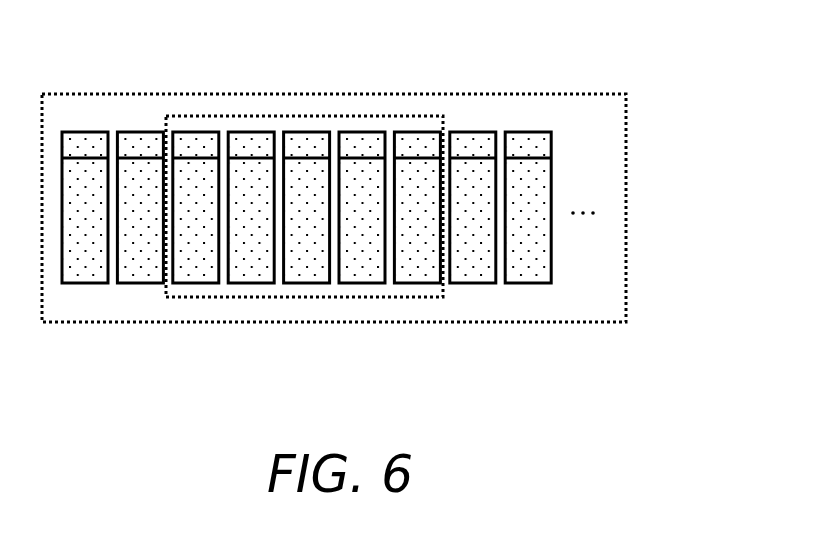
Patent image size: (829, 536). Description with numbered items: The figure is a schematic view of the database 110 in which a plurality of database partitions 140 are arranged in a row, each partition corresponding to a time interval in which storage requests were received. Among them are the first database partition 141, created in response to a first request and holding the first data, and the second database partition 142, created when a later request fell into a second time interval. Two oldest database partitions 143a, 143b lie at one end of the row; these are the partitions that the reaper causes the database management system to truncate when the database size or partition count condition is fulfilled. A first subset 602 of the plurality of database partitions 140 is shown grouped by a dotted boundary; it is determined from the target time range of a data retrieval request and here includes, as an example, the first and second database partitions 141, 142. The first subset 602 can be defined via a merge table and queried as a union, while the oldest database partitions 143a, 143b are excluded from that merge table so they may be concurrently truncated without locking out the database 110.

The database 110 is at (626, 217).
The plurality of database partitions 140 is at (329, 208).
The first database partition 141 is at (250, 133).
The second database partition 142 is at (303, 133).
The oldest database partition 143a is at (80, 133).
The oldest database partition 143b is at (147, 133).
The first subset of the plurality of database partitions 602 is at (374, 117).